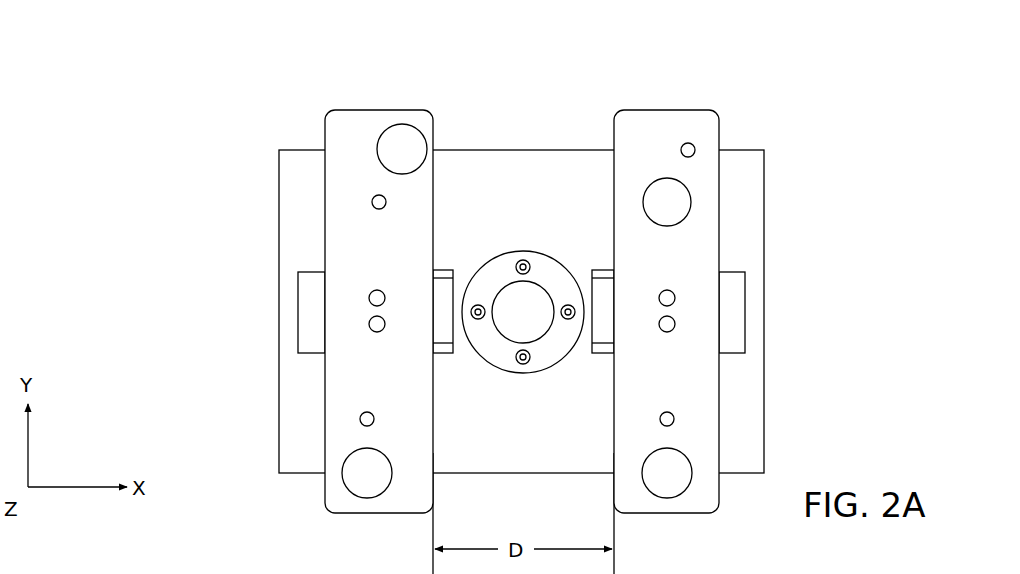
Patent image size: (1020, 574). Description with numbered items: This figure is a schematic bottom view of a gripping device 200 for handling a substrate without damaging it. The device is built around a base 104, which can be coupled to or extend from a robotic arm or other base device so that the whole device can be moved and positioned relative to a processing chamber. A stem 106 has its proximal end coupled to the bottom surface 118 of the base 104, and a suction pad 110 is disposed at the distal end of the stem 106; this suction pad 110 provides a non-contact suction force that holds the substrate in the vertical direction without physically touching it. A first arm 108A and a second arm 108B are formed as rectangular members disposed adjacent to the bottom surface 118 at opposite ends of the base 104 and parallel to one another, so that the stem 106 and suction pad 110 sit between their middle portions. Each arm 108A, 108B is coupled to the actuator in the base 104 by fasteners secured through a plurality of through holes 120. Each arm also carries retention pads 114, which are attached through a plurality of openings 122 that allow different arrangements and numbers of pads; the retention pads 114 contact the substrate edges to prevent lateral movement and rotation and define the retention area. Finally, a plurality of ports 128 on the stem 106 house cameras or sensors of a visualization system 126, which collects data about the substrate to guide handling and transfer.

The mounting assembly 200 is at (284, 52).
The base 104 is at (285, 150).
The stem 106 is at (559, 273).
The first arm 108A is at (372, 110).
The second arm 108B is at (645, 110).
The suction pad 110 is at (508, 322).
The retention pads 114 is at (422, 138).
The bottom surface 118 is at (300, 247).
The through holes 120 is at (377, 291).
The openings 122 is at (360, 195).
The visualization system 126 is at (515, 267).
The ports 128 is at (529, 254).